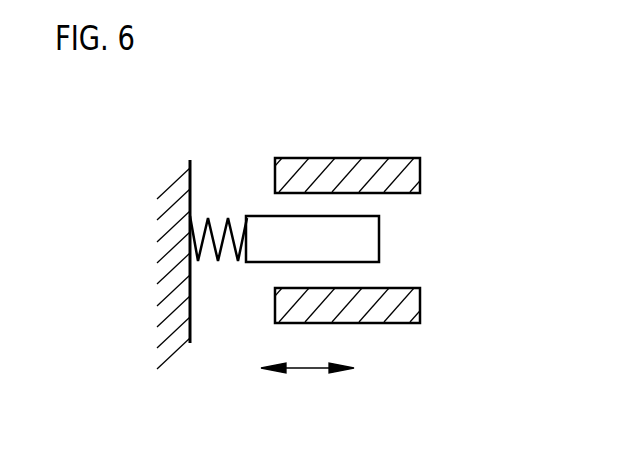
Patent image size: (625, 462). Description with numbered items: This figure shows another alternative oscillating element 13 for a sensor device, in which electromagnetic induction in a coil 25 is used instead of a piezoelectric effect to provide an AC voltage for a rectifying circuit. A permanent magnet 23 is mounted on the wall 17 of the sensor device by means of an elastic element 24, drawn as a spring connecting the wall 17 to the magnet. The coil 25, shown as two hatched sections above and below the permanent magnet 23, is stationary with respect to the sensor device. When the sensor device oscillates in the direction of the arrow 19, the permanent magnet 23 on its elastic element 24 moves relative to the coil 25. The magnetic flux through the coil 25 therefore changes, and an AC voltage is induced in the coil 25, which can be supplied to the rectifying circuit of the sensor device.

The oscillating element 13 is at (449, 218).
The wall 17 is at (176, 235).
The arrow 19 is at (307, 370).
The permanent magnet 23 is at (380, 245).
The elastic element 24 is at (209, 219).
The coil 25 is at (398, 157).